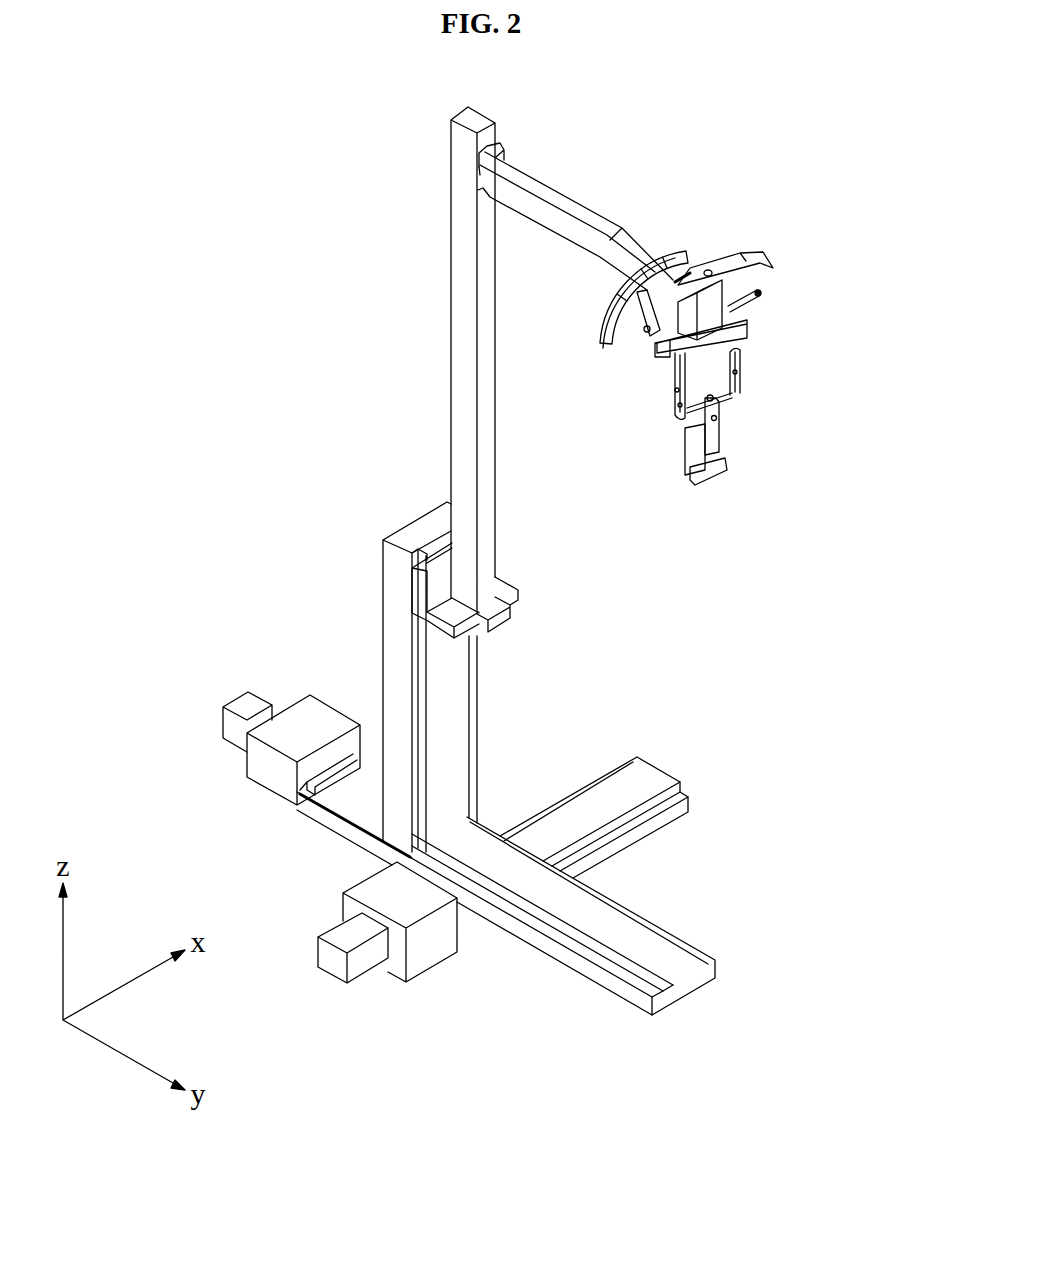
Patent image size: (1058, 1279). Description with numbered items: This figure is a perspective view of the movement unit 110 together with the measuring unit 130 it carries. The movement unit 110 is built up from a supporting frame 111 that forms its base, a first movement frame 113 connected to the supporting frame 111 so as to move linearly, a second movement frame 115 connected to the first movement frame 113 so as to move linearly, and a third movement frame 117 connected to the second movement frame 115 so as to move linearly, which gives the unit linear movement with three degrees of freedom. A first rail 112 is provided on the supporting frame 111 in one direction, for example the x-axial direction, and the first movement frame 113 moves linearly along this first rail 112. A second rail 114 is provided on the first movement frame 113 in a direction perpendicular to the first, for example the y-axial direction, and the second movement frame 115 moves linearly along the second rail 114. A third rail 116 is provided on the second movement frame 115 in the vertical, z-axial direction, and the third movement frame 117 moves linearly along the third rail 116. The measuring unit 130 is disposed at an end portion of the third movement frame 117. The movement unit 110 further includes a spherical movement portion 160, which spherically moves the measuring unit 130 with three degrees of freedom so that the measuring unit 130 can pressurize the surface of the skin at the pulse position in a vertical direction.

The movement unit 110 is at (333, 343).
The supporting frame 111 is at (693, 802).
The first rail 112 is at (624, 818).
The first movement frame 113 is at (605, 978).
The second rail 114 is at (542, 920).
The second movement frame 115 is at (393, 600).
The third rail 116 is at (415, 670).
The third movement frame 117 is at (460, 447).
The measuring unit 130 is at (760, 343).
The spherical movement portion 160 is at (720, 241).